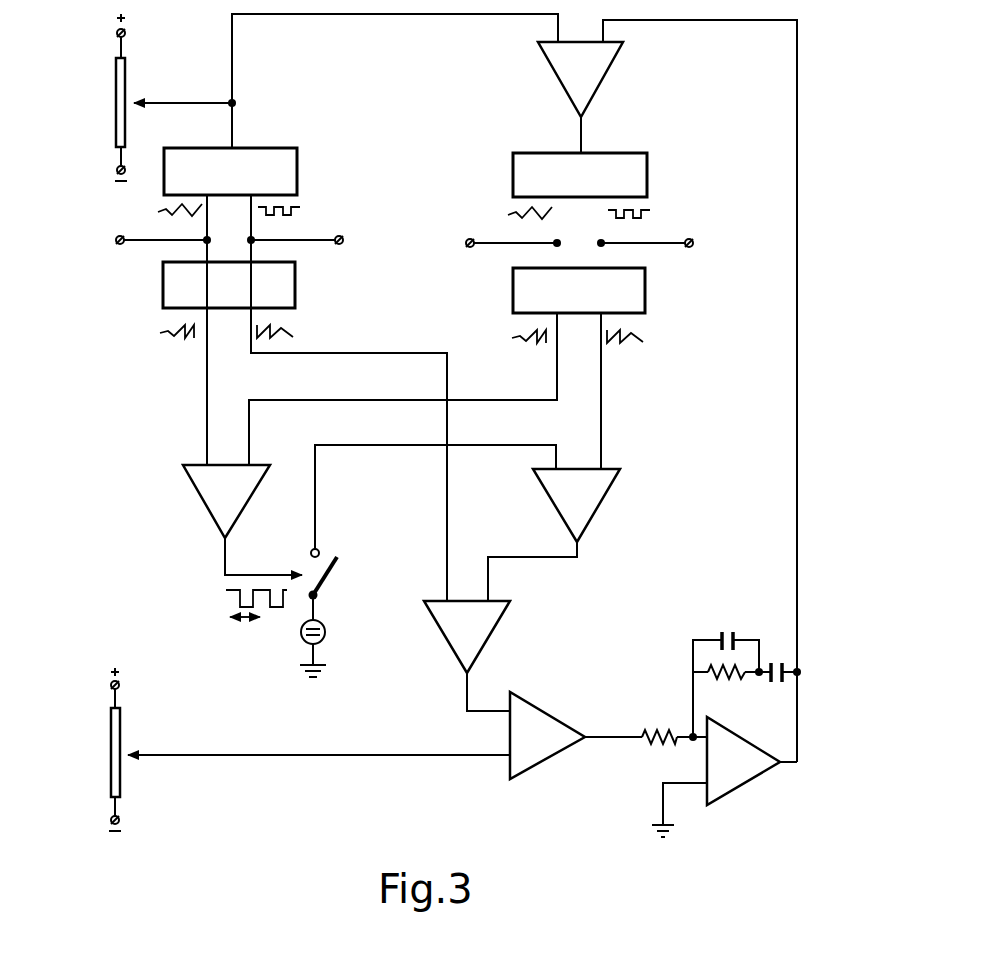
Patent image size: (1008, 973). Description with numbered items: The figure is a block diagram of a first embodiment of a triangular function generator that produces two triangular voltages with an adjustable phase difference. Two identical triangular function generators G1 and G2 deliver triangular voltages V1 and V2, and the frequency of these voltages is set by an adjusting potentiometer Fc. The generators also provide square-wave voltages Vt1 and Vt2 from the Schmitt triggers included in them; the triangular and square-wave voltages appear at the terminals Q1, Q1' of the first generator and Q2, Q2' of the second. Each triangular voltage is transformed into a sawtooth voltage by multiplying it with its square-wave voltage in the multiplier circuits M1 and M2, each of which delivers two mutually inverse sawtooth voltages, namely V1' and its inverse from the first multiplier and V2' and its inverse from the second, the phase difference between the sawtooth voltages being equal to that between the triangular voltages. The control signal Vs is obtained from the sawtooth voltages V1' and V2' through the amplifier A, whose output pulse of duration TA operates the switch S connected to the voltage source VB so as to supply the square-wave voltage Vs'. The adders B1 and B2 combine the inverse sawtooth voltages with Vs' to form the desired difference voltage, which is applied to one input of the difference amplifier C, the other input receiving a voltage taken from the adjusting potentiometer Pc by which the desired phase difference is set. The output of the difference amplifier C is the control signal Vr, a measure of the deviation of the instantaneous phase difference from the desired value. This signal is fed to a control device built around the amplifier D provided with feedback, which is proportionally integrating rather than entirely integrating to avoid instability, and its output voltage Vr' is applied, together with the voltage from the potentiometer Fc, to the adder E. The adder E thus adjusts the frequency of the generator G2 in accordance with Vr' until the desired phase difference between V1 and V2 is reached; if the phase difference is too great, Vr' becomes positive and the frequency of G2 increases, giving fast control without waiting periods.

The frequency adjusting potentiometer Fc is at (127, 83).
The adjusting potentiometer Pc is at (121, 779).
The triangular function generator G1 is at (237, 186).
The triangular function generator G2 is at (586, 190).
The multiplier circuit M1 is at (236, 300).
The multiplier circuit M2 is at (586, 305).
The adder E is at (588, 80).
The amplifier A is at (234, 505).
The adder B1 is at (582, 509).
The adder B2 is at (471, 640).
The difference amplifier C is at (546, 749).
The amplifier D is at (745, 774).
The switch S is at (332, 572).
The voltage source VB is at (325, 634).
The output terminal Q1 is at (157, 259).
The output terminal Q1' is at (302, 259).
The output terminal Q2 is at (507, 262).
The output terminal Q2' is at (654, 262).
The triangular voltage V1 is at (167, 213).
The square-wave voltage Vt1 is at (295, 213).
The sawtooth voltage V1' is at (162, 334).
The triangular voltage V2 is at (517, 216).
The square-wave voltage Vt2 is at (645, 216).
The sawtooth voltage V2' is at (516, 339).
The square-wave voltage Vs' is at (332, 494).
The control signal Vs is at (280, 560).
The pulse duration TA is at (256, 623).
The control signal Vr is at (608, 752).
The output voltage of control device Vr' is at (780, 561).